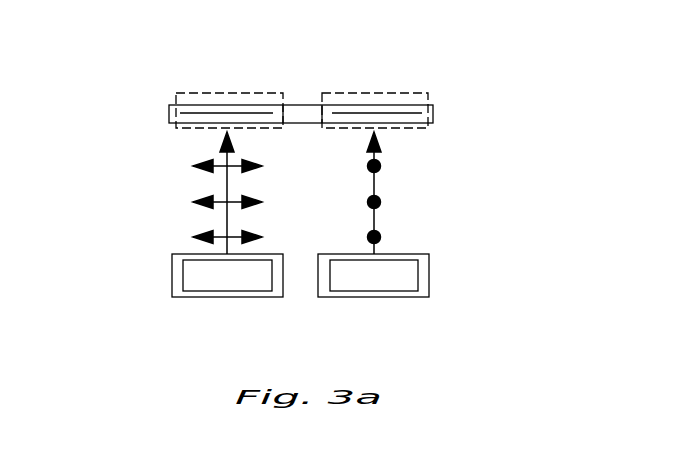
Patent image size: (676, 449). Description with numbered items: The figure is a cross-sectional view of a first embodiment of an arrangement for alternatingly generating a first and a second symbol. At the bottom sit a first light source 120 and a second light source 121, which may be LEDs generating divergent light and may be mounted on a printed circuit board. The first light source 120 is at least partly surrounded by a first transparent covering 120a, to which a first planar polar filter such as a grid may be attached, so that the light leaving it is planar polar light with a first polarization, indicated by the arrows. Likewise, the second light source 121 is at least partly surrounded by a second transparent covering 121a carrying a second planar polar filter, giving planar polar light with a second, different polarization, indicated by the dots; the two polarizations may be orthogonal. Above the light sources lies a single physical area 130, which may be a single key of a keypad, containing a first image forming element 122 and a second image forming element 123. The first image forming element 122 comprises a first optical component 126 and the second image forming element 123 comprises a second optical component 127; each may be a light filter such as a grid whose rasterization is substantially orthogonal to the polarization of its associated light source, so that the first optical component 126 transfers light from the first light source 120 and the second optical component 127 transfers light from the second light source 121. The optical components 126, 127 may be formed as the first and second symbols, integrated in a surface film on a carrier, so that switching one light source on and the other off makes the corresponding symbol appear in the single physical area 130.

The first light source 120 is at (183, 261).
The first transparent covering 120a is at (172, 297).
The second light source 121 is at (418, 279).
The second transparent covering 121a is at (429, 297).
The first image forming element 122 is at (193, 93).
The second image forming element 123 is at (380, 93).
The first optical component 126 is at (207, 113).
The second optical component 127 is at (395, 113).
The single physical area 130 is at (433, 112).